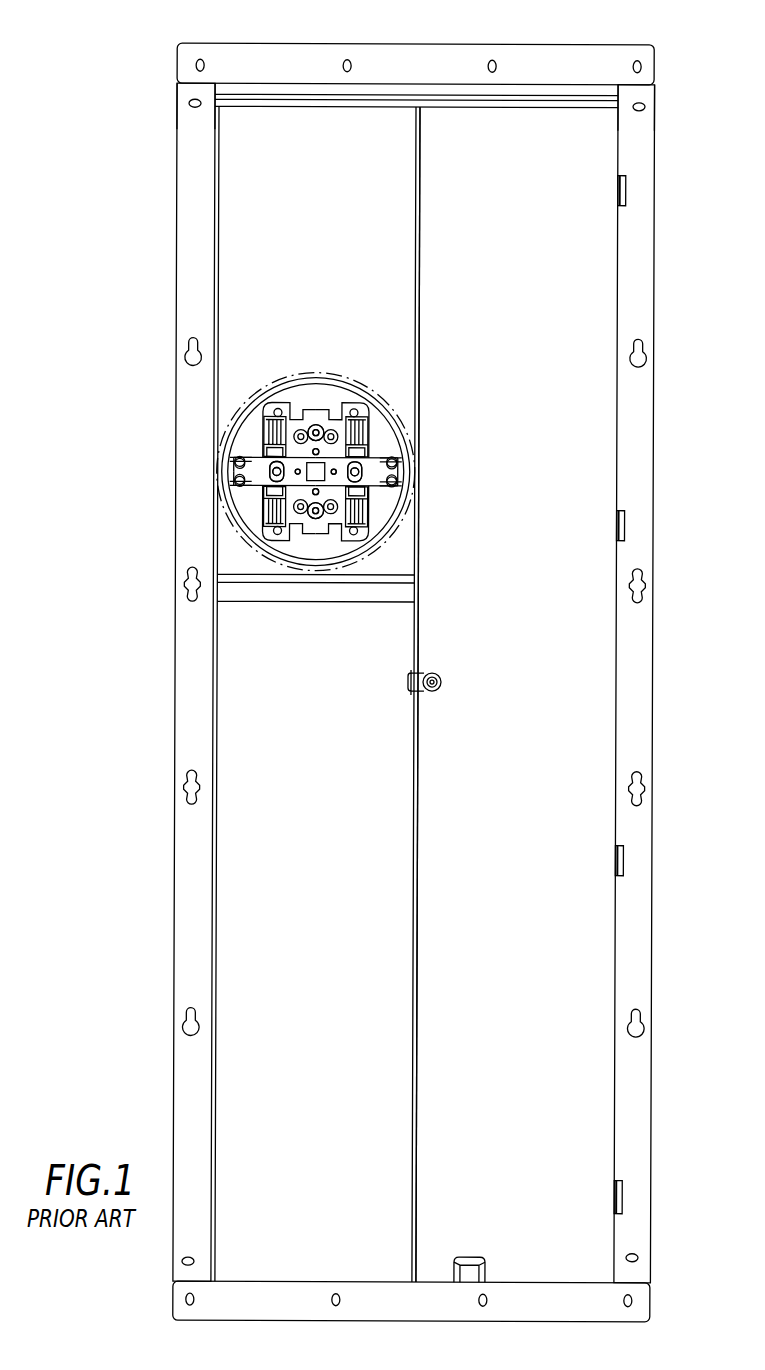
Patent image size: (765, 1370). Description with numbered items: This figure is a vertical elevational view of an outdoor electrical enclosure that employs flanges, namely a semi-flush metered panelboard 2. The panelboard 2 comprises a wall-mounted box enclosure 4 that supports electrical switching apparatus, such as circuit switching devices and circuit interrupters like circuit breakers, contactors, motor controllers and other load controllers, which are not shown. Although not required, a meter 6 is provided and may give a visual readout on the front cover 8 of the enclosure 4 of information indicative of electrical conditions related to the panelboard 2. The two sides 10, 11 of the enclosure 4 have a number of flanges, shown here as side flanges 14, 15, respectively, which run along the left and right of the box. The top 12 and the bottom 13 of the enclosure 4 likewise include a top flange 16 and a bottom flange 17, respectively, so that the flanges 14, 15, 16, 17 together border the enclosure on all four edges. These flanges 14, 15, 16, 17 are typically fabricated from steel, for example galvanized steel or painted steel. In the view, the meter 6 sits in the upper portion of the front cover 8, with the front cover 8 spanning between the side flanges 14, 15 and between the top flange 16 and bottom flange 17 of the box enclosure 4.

The semi-flush metered panelboard 2 is at (702, 1251).
The wall-mounted box enclosure 4 is at (668, 648).
The meter 6 is at (250, 441).
The front cover 8 is at (227, 634).
The side 10 is at (177, 122).
The side 11 is at (655, 148).
The top 12 is at (526, 45).
The bottom 13 is at (617, 1321).
The side flange 14 is at (187, 700).
The side flange 15 is at (641, 918).
The top flange 16 is at (597, 52).
The bottom flange 17 is at (558, 1296).